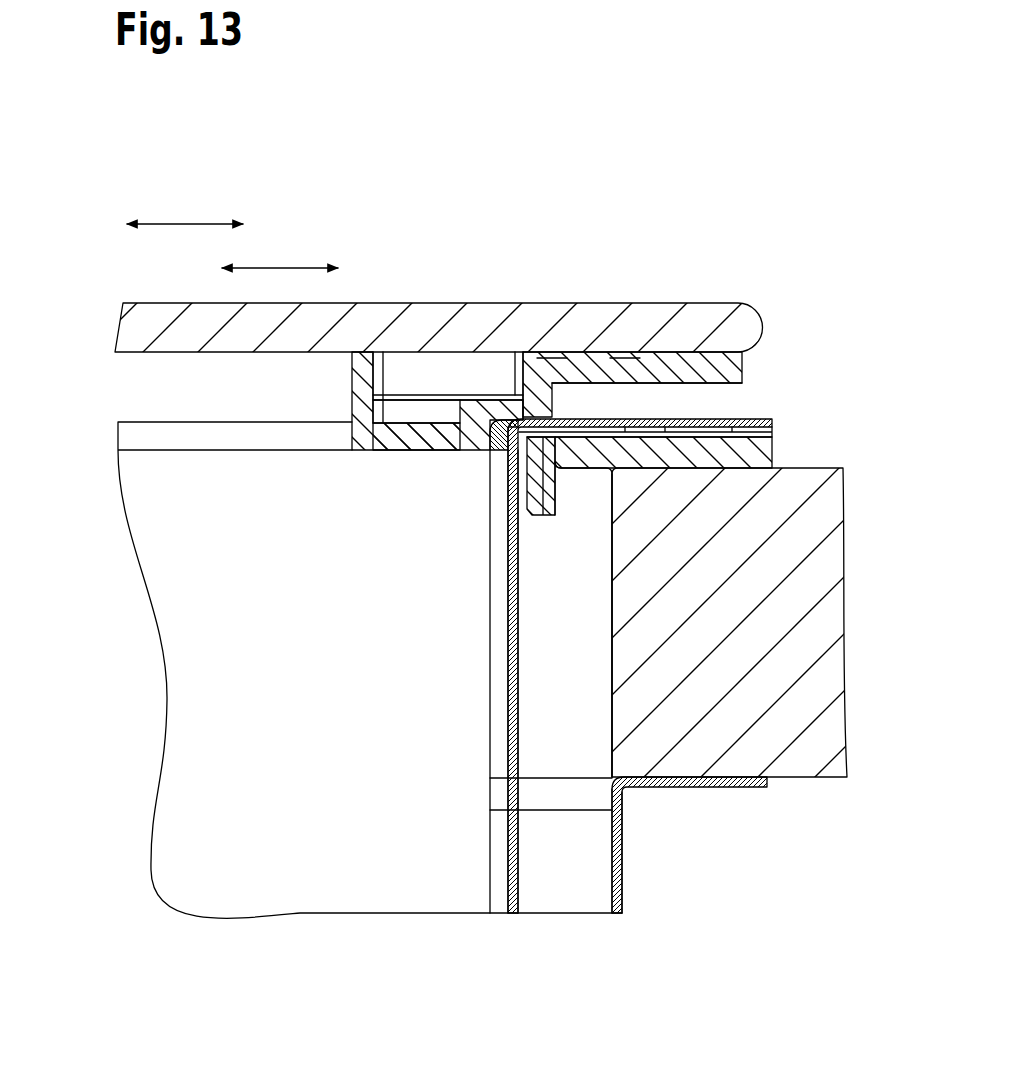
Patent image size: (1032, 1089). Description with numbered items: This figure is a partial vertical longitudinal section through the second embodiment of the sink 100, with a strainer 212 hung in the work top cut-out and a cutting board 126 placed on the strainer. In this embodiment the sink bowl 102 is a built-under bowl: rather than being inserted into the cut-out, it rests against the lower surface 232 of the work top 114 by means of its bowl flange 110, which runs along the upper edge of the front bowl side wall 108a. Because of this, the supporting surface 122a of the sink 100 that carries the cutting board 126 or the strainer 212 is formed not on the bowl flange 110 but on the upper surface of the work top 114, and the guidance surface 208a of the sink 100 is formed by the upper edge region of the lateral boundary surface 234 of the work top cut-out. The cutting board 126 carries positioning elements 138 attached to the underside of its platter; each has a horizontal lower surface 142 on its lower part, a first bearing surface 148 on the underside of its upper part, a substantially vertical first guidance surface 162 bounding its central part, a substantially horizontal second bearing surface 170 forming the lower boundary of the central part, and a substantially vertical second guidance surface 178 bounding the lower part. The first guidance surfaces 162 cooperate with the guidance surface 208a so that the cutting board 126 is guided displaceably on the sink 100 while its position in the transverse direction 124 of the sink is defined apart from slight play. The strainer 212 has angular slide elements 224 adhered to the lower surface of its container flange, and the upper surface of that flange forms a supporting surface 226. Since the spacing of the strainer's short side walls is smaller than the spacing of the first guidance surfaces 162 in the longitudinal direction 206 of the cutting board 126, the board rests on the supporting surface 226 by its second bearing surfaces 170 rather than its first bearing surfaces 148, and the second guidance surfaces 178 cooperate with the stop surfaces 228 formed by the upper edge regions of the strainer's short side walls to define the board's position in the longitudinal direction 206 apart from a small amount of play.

The sink 100 is at (86, 408).
The sink bowl 102 is at (610, 840).
The front bowl side wall 108a is at (610, 878).
The bowl flange 110 is at (708, 787).
The work top 114 is at (800, 578).
The supporting surface 122a is at (777, 447).
The transverse direction of the sink 124 is at (190, 222).
The cutting board 126 is at (447, 315).
The positioning element 138 is at (358, 452).
The lower surface 142 is at (415, 452).
The first bearing surface 148 is at (707, 400).
The first guidance surface 162 is at (558, 403).
The second bearing surface 170 is at (549, 518).
The second guidance surface 178 is at (513, 400).
The longitudinal direction of the cutting board 206 is at (283, 267).
The guidance surface of the sink 208a is at (610, 508).
The strainer 212 is at (510, 686).
The angular slide element 224 is at (772, 446).
The supporting surface of the strainer 226 is at (650, 413).
The stop surface of the strainer 228 is at (487, 452).
The lower surface of the work top 232 is at (837, 780).
The lateral boundary surface of the work top cut-out 234 is at (610, 637).